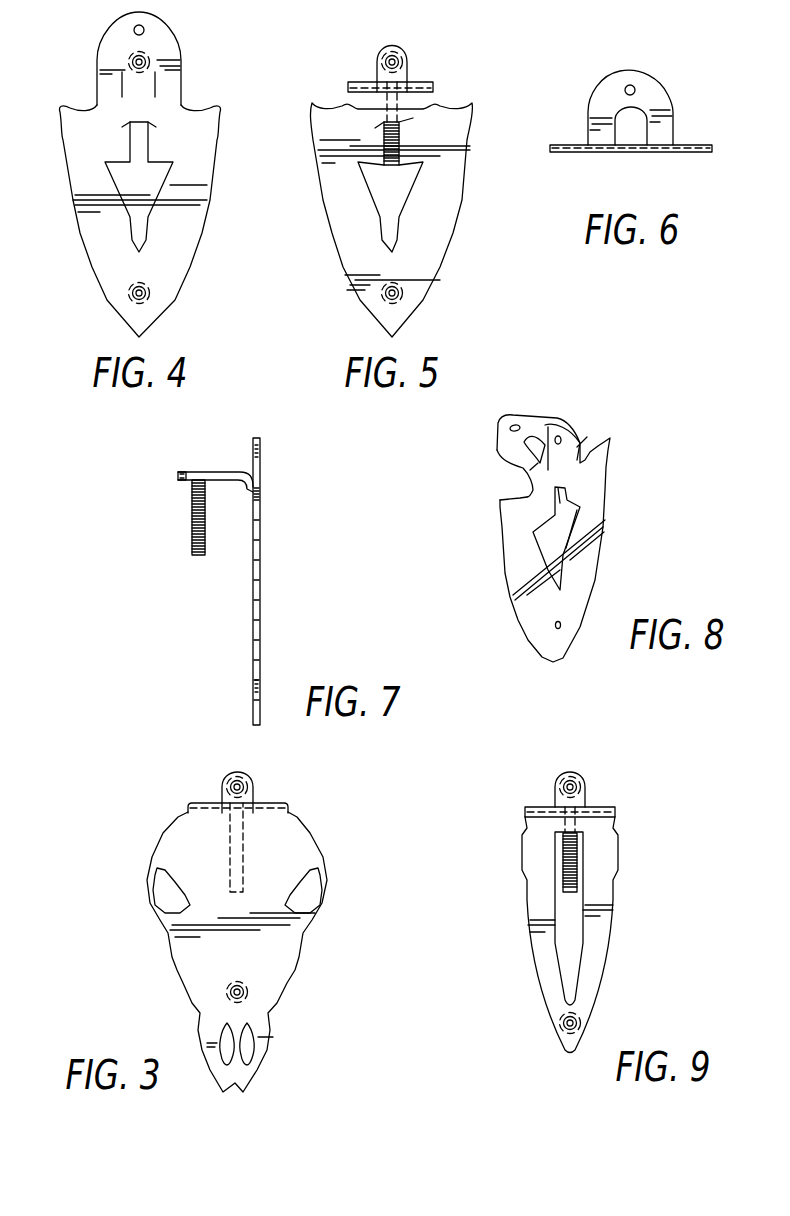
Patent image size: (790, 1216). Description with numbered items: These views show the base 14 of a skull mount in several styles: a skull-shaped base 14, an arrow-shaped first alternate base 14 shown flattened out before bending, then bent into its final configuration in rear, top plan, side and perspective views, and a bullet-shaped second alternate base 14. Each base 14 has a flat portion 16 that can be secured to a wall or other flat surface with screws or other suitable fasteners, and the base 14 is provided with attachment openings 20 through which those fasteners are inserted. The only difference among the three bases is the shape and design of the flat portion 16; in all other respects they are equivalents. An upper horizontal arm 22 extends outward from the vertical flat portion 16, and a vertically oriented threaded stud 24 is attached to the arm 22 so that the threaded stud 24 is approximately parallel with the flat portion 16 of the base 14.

In FIG. 4, the base 14 is at (192, 141).
In FIG. 5, the base 14 is at (445, 183).
In FIG. 6, the base 14 is at (665, 69).
In FIG. 7, the base 14 is at (260, 617).
In FIG. 8, the base 14 is at (600, 480).
In FIG. 3, the base 14 is at (278, 975).
In FIG. 9, the base 14 is at (600, 847).
In FIG. 4, the flat portion 16 is at (190, 230).
In FIG. 5, the flat portion 16 is at (442, 230).
In FIG. 6, the flat portion 16 is at (690, 153).
In FIG. 7, the flat portion 16 is at (260, 557).
In FIG. 8, the flat portion 16 is at (588, 562).
In FIG. 9, the flat portion 16 is at (600, 940).
In FIG. 4, the attachment openings 20 is at (143, 60).
In FIG. 5, the attachment openings 20 is at (396, 60).
In FIG. 6, the attachment openings 20 is at (630, 153).
In FIG. 7, the attachment openings 20 is at (260, 453).
In FIG. 8, the attachment openings 20 is at (560, 438).
In FIG. 3, the attachment openings 20 is at (230, 786).
In FIG. 9, the attachment openings 20 is at (563, 786).
In FIG. 5, the upper horizontal arm 22 is at (426, 81).
In FIG. 6, the upper horizontal arm 22 is at (610, 97).
In FIG. 7, the upper horizontal arm 22 is at (225, 472).
In FIG. 8, the upper horizontal arm 22 is at (537, 422).
In FIG. 3, the upper horizontal arm 22 is at (270, 803).
In FIG. 9, the upper horizontal arm 22 is at (600, 807).
In FIG. 5, the threaded stud 24 is at (393, 168).
In FIG. 7, the threaded stud 24 is at (192, 524).
In FIG. 3, the threaded stud 24 is at (244, 855).
In FIG. 9, the threaded stud 24 is at (576, 870).